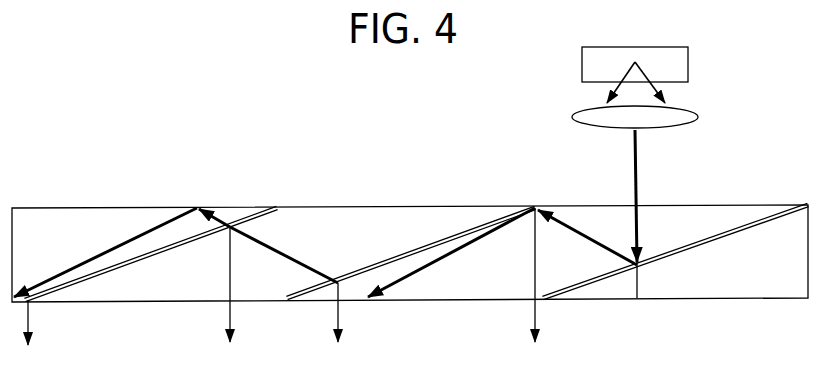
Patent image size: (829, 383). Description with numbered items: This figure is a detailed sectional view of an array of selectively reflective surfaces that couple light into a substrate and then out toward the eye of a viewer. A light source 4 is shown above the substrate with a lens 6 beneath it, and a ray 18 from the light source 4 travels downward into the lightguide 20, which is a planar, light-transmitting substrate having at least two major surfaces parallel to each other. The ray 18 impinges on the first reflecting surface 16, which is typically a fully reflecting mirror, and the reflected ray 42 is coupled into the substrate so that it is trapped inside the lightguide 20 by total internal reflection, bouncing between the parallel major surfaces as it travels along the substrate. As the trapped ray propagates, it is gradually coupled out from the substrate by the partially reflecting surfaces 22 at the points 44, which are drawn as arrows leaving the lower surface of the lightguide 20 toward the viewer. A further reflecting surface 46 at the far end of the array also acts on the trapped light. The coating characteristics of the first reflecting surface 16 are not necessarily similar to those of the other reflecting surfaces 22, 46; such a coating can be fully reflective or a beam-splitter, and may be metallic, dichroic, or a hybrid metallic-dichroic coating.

The light source 4 is at (592, 63).
The lens 6 is at (680, 117).
The first reflecting surface 16 is at (731, 225).
The ray 18 is at (632, 163).
The lightguide 20 is at (214, 281).
The partially reflecting surfaces 22 is at (448, 235).
The reflected ray 42 is at (572, 222).
The points 44 is at (255, 243).
The reflecting surface 46 is at (234, 222).